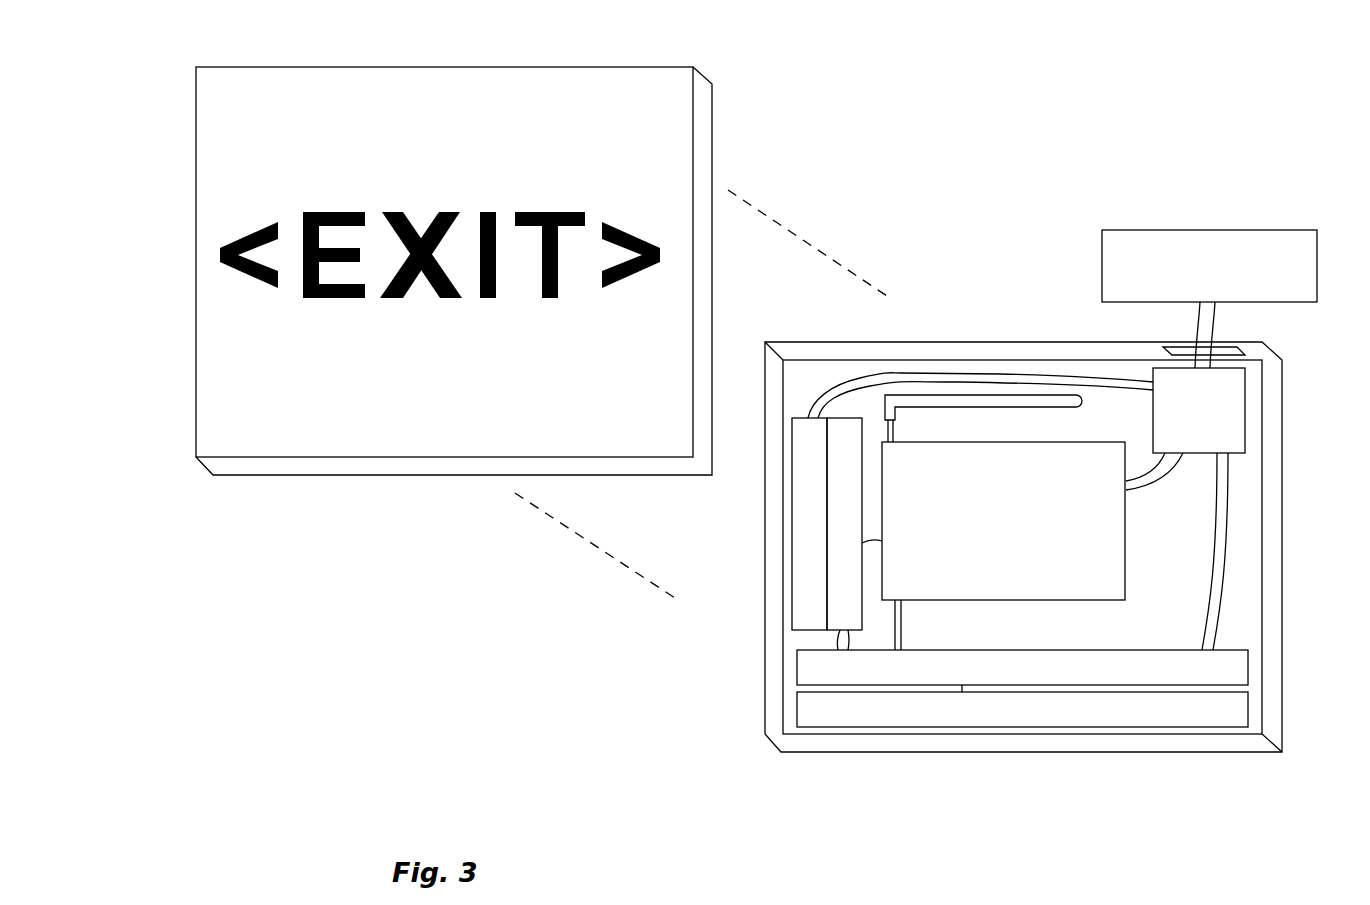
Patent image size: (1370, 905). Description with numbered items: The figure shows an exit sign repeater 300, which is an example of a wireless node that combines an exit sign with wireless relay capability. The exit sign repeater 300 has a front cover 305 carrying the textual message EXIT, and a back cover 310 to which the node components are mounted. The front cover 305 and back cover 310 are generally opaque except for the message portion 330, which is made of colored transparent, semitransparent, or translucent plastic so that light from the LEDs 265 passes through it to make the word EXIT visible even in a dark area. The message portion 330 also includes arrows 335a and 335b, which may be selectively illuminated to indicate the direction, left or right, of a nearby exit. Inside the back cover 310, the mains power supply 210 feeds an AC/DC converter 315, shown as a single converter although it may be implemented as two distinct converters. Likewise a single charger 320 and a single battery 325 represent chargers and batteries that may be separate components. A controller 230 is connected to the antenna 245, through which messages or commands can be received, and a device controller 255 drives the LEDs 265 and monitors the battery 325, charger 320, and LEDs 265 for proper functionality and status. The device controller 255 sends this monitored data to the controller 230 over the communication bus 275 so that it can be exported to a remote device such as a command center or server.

The exit sign repeater 300 is at (402, 752).
The front cover 305 is at (533, 66).
The message portion 330 is at (295, 178).
The arrow 335a is at (249, 294).
The arrow 335b is at (623, 297).
The back cover 310 is at (1282, 619).
The mains power supply 210 is at (1209, 299).
The AC/DC converter 315 is at (1185, 509).
The antenna 245 is at (983, 418).
The controller 230 is at (1003, 521).
The charger 320 is at (972, 501).
The battery 325 is at (854, 534).
The communication bus 275 is at (902, 616).
The device controller 255 is at (1022, 671).
The LEDs 265 is at (1022, 709).